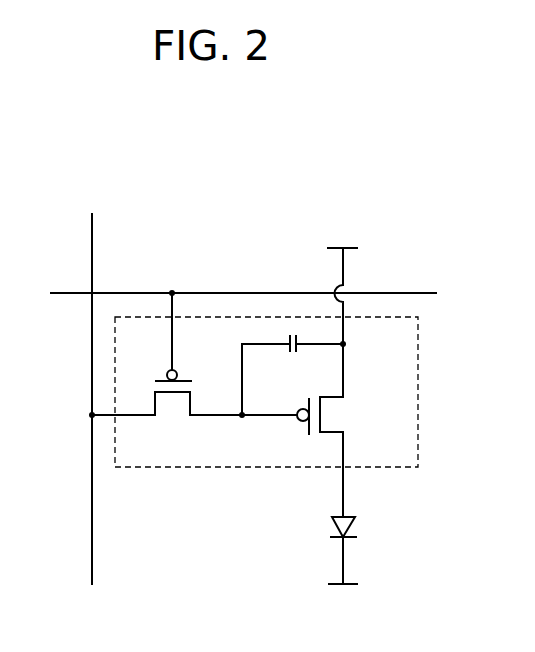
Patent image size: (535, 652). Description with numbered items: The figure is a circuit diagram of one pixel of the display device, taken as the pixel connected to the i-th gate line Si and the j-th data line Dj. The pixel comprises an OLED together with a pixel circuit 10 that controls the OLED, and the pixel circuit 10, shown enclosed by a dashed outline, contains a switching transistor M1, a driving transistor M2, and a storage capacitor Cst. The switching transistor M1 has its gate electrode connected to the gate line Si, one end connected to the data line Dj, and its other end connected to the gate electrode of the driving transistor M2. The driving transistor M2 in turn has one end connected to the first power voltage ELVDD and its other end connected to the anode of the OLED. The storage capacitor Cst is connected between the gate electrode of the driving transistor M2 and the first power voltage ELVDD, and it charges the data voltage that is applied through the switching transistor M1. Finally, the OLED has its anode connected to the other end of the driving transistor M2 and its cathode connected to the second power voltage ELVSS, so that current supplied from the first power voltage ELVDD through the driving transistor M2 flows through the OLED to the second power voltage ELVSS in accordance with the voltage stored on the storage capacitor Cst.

The pixel circuit 10 is at (418, 353).
The j-th data line Dj is at (89, 385).
The i-th gate line Si is at (233, 293).
The first power voltage ELVDD is at (346, 282).
The second power voltage ELVSS is at (343, 600).
The switching transistor M1 is at (194, 370).
The driving transistor M2 is at (340, 430).
The storage capacitor Cst is at (292, 365).
The element OLED is at (375, 549).